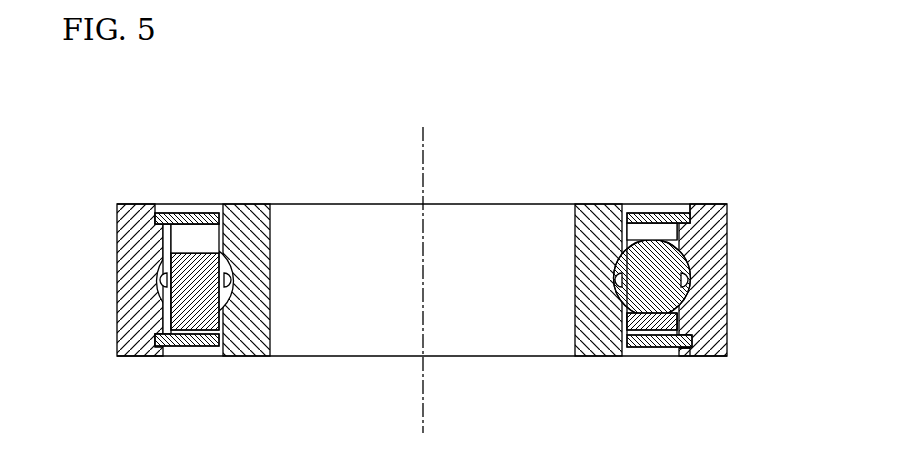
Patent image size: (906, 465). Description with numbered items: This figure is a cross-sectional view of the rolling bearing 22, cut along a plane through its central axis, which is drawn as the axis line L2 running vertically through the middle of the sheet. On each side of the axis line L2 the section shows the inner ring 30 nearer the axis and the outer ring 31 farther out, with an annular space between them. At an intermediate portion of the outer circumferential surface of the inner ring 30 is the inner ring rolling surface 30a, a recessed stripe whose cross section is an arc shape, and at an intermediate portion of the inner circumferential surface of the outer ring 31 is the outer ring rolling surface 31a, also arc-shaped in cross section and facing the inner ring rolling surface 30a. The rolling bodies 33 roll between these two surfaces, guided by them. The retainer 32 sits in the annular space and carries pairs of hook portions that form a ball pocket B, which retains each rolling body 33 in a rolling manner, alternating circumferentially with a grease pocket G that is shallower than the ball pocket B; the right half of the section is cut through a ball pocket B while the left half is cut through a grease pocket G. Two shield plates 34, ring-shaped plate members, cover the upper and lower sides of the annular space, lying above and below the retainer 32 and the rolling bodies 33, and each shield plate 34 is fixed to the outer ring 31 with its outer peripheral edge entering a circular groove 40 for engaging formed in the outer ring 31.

The rolling bearing 22 is at (700, 116).
The inner ring 30 is at (600, 206).
The inner ring rolling surface 30a is at (228, 285).
The outer ring 31 is at (706, 238).
The outer ring rolling surface 31a is at (165, 285).
The retainer 32 is at (215, 292).
The rolling bodies 33 is at (165, 263).
The shield plates 34 is at (185, 206).
The circular groove 40 is at (693, 203).
The ball pocket B is at (650, 235).
The grease pocket G is at (192, 240).
The axis line L2 is at (423, 139).